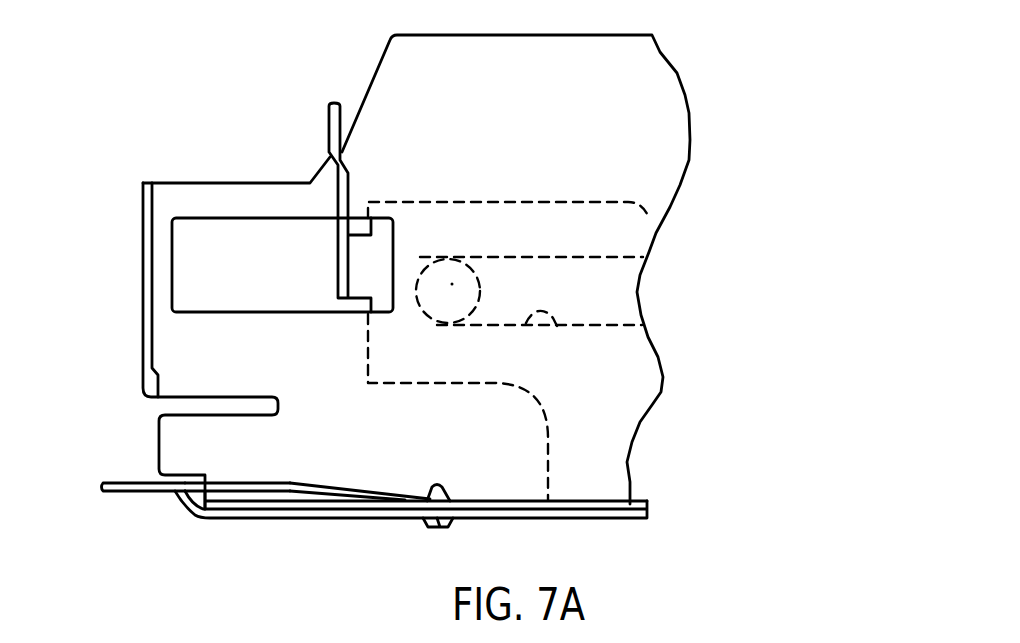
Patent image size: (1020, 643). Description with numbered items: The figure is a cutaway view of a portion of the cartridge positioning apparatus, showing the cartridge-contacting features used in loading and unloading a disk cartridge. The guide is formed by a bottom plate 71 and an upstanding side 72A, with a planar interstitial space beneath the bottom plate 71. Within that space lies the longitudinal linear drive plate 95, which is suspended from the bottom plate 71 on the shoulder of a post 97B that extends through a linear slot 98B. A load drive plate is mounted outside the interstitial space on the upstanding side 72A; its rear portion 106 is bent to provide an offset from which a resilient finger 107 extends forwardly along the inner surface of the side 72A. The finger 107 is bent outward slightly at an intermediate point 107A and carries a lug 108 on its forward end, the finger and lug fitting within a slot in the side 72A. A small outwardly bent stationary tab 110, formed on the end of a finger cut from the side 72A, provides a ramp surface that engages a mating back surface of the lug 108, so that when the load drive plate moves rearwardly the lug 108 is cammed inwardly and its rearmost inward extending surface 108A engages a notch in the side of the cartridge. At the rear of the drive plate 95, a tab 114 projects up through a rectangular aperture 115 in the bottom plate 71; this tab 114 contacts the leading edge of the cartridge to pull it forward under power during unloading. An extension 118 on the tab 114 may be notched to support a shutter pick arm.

The bottom plate 71 is at (655, 350).
The upstanding side 72A is at (600, 499).
The longitudinal linear drive plate 95 is at (473, 202).
The post 97B is at (472, 272).
The linear slot 98B is at (557, 326).
The rear portion 106 is at (130, 491).
The resilient finger 107 is at (227, 481).
The intermediate point 107A is at (290, 484).
The lug 108 is at (442, 499).
The rearmost inward extending surface 108A is at (427, 498).
The stationary tab 110 is at (438, 521).
The tab 114 is at (338, 262).
The rectangular aperture 115 is at (198, 218).
The extension 118 is at (329, 128).